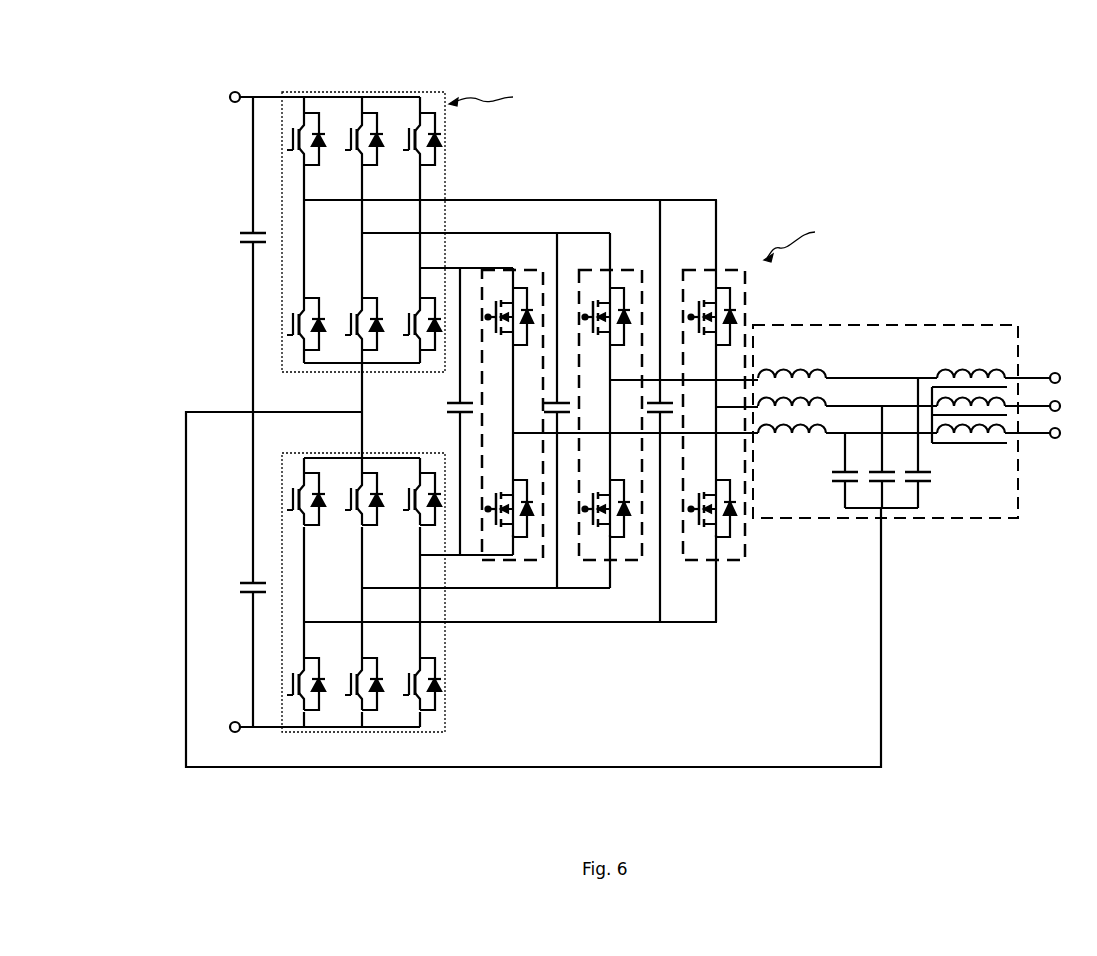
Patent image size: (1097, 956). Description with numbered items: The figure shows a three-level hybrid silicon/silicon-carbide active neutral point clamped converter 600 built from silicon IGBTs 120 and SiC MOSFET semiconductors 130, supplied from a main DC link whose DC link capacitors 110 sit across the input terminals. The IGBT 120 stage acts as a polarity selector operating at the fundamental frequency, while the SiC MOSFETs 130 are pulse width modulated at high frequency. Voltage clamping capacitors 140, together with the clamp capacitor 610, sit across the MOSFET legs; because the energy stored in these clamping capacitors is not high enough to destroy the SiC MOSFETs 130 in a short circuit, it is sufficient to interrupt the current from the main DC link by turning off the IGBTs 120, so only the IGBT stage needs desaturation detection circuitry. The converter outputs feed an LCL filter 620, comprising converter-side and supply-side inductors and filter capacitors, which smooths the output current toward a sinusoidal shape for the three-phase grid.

The hybrid power converter 600 is at (471, 429).
The DC link capacitor 110 is at (235, 420).
The IGBT 120 is at (423, 112).
The semiconductors 130 is at (724, 270).
The voltage clamping capacitors 140 is at (594, 411).
The clamp capacitor 610 is at (342, 360).
The LCL filter 620 is at (986, 312).